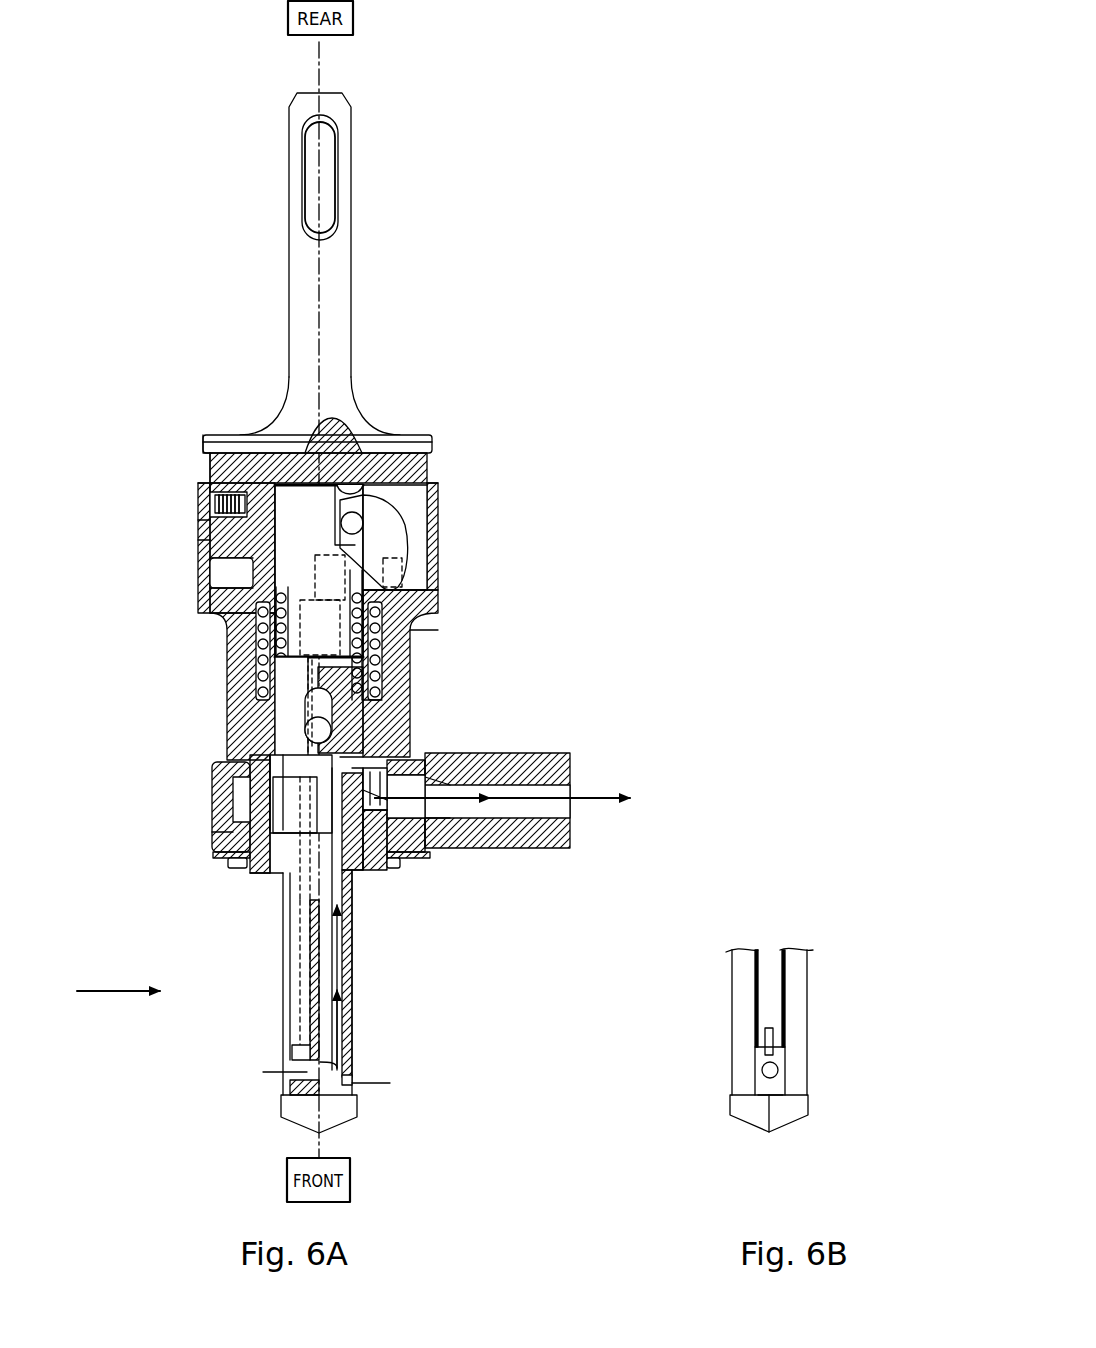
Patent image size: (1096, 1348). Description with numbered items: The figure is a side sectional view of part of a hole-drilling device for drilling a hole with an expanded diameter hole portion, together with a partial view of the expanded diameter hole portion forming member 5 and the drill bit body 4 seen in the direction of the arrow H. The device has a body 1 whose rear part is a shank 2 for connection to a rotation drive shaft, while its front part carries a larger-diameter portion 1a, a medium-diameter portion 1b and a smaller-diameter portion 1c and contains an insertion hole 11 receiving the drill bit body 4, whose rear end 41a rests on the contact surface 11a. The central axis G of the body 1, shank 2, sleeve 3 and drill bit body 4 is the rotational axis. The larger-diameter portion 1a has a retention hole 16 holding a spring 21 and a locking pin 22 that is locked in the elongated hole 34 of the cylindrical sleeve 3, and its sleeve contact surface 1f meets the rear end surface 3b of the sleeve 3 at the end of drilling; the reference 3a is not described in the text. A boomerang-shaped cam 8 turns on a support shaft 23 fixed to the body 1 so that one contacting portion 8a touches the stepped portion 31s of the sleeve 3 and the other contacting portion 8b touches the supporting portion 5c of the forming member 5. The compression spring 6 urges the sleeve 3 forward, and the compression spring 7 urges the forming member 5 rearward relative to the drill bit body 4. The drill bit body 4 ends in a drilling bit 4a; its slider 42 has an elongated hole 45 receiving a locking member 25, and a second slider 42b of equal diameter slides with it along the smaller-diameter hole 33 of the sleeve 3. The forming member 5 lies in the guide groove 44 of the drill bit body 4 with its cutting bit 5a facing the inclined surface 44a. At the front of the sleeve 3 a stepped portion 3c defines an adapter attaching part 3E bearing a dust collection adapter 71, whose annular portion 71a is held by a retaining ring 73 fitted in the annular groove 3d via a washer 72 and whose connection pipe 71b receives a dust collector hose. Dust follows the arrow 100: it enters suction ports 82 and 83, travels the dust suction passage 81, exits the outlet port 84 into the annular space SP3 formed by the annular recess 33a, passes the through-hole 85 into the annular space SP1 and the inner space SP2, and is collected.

In FIG. 6A, the central axis G is at (330, 63).
In FIG. 6A, the arrow H is at (110, 995).
In FIG. 6A, the body 1 is at (418, 433).
In FIG. 6A, the larger-diameter portion 1a is at (205, 558).
In FIG. 6A, the medium-diameter portion 1b is at (210, 582).
In FIG. 6A, the smaller-diameter portion 1c is at (225, 640).
In FIG. 6A, the sleeve contact surface 1f is at (433, 457).
In FIG. 6A, the shank 2 is at (351, 185).
In FIG. 6A, the sleeve 3 is at (222, 655).
In FIG. 6A, the body portion 3a is at (272, 878).
In FIG. 6A, the rear end surface 3b is at (440, 483).
In FIG. 6A, the stepped portion 3c is at (218, 775).
In FIG. 6A, the annular groove 3d is at (262, 878).
In FIG. 6A, the adapter attaching part 3E is at (215, 832).
In FIG. 6A, the drill bit body 4 is at (355, 985).
In FIG. 6B, the drill bit body 4 is at (805, 1000).
In FIG. 6A, the drilling bit 4a is at (340, 1120).
In FIG. 6B, the drilling bit 4a is at (800, 1120).
In FIG. 6A, the expanded diameter hole portion forming member 5 is at (290, 960).
In FIG. 6B, the expanded diameter hole portion forming member 5 is at (790, 970).
In FIG. 6A, the cutting bit 5a is at (285, 1062).
In FIG. 6B, the cutting bit 5a is at (760, 1035).
In FIG. 6A, the supporting portion 5c is at (200, 537).
In FIG. 6A, the compression spring 6 is at (420, 643).
In FIG. 6A, the compression spring 7 is at (438, 614).
In FIG. 6A, the cam 8 is at (438, 540).
In FIG. 6A, the contacting portion 8a is at (438, 572).
In FIG. 6A, the contacting portion 8b is at (200, 527).
In FIG. 6A, the insertion hole 11 is at (440, 505).
In FIG. 6A, the contact surface 11a is at (362, 484).
In FIG. 6A, the retention hole 16 is at (237, 488).
In FIG. 6A, the spring 21 is at (210, 462).
In FIG. 6A, the locking pin 22 is at (200, 492).
In FIG. 6A, the support shaft 23 is at (365, 525).
In FIG. 6A, the locking member 25 is at (345, 705).
In FIG. 6A, the stepped portion 31s is at (438, 582).
In FIG. 6A, the smaller-diameter hole 33 is at (357, 885).
In FIG. 6A, the annular recess 33a is at (300, 790).
In FIG. 6A, the elongated hole 34 is at (205, 513).
In FIG. 6A, the rear end 41a is at (336, 432).
In FIG. 6A, the slider 42 is at (290, 690).
In FIG. 6A, the slider 42b is at (283, 740).
In FIG. 6A, the guide groove 44 is at (290, 1000).
In FIG. 6B, the guide groove 44 is at (786, 1030).
In FIG. 6A, the inclined surface 44a is at (288, 1088).
In FIG. 6B, the inclined surface 44a is at (785, 1082).
In FIG. 6A, the elongated hole 45 is at (365, 690).
In FIG. 6A, the dust collection adapter 71 is at (560, 752).
In FIG. 6A, the annular portion 71a is at (470, 745).
In FIG. 6A, the connection pipe 71b is at (495, 750).
In FIG. 6A, the washer 72 is at (213, 855).
In FIG. 6A, the retaining ring 73 is at (240, 872).
In FIG. 6A, the dust suction passage 81 is at (345, 935).
In FIG. 6A, the suction port 82 is at (346, 1075).
In FIG. 6A, the suction port 83 is at (270, 1074).
In FIG. 6B, the suction port 83 is at (762, 1068).
In FIG. 6A, the outlet port 84 is at (355, 742).
In FIG. 6A, the through-hole 85 is at (490, 855).
In FIG. 6A, the arrow 100 is at (590, 760).
In FIG. 6A, the annular space SP1 is at (243, 800).
In FIG. 6A, the inner space SP2 is at (545, 855).
In FIG. 6A, the annular space SP3 is at (262, 745).